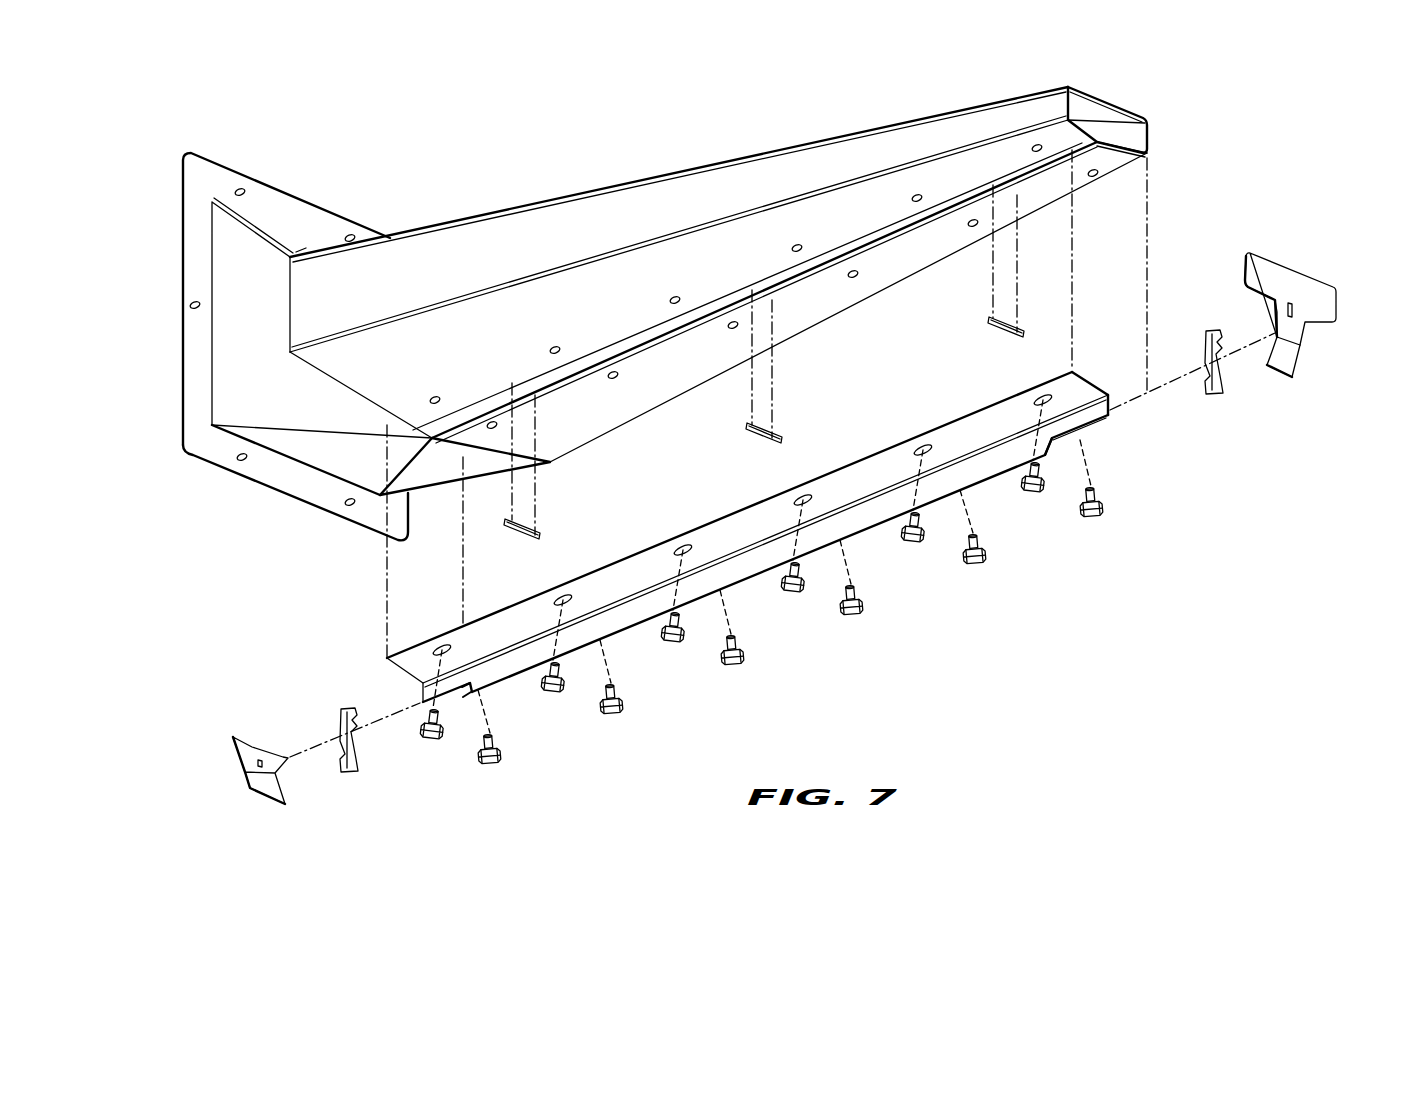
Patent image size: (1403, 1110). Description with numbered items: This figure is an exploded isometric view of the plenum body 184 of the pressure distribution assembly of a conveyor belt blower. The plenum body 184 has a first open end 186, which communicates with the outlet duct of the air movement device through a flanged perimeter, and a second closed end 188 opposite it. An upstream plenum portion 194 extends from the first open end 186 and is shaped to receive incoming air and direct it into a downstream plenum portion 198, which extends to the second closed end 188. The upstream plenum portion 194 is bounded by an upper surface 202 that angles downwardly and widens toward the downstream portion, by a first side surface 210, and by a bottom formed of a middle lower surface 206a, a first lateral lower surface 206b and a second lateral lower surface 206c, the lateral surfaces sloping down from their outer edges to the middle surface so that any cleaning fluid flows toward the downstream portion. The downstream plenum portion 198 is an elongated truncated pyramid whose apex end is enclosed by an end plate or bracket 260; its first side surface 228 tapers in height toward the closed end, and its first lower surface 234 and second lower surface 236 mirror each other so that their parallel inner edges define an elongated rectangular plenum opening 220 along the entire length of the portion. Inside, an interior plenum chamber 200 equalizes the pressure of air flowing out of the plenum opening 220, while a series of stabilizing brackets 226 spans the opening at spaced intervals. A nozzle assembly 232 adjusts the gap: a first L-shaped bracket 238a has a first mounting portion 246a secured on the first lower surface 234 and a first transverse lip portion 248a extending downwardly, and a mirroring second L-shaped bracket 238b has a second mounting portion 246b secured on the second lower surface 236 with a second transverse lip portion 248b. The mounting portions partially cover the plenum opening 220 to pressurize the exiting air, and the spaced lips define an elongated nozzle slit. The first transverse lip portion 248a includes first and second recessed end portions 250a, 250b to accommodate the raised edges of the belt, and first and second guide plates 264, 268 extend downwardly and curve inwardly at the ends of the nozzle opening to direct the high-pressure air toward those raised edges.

The plenum body 184 is at (709, 307).
The first open end 186 is at (256, 214).
The second closed end 188 is at (1104, 123).
The upstream plenum portion 194 is at (289, 236).
The downstream plenum portion 198 is at (836, 137).
The interior plenum chamber 200 is at (1115, 122).
The upper surface 202 is at (303, 247).
The middle lower surface 206a is at (312, 453).
The first lateral lower surface 206b is at (265, 403).
The second lateral lower surface 206c is at (438, 475).
The first side surface 210 is at (238, 288).
The plenum opening 220 is at (1102, 151).
The stabilizing brackets 226 is at (1005, 338).
The downstream plenum portion first side surface 228 is at (668, 203).
The nozzle assembly 232 is at (372, 805).
The downstream plenum portion first lower surface 234 is at (573, 303).
The downstream plenum portion second lower surface 236 is at (655, 395).
The first L-shaped bracket 238a is at (1096, 380).
The second L-shaped bracket 238b is at (1152, 407).
The first mounting portion 246a is at (814, 542).
The second mounting portion 246b is at (1125, 393).
The first transverse lip portion 248a is at (871, 512).
The second transverse lip portion 248b is at (1122, 418).
The first recessed end portion 250a is at (471, 705).
The second recessed end portion 250b is at (1106, 443).
The end plate or bracket 260 is at (1308, 312).
The first guide plate 264 is at (259, 788).
The second guide plate 268 is at (1288, 363).